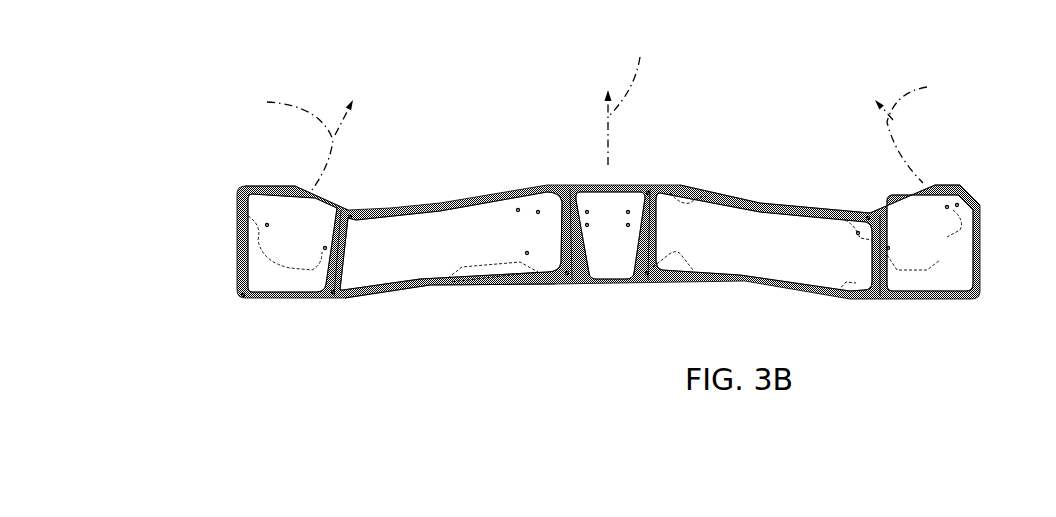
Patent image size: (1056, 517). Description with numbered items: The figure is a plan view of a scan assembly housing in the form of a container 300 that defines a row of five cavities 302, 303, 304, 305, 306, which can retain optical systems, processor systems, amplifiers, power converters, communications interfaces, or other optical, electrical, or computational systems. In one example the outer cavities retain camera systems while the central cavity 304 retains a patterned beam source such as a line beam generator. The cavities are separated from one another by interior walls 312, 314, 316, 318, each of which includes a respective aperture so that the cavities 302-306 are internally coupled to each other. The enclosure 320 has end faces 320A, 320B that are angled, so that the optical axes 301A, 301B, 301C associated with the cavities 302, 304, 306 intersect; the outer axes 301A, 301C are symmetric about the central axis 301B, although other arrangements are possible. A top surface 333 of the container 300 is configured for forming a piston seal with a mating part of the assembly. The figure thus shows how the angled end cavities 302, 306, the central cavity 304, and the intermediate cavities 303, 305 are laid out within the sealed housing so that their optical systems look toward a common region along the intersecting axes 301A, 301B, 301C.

The container 300 is at (208, 317).
The optical axis 301A is at (278, 141).
The optical axis 301B is at (635, 92).
The optical axis 301C is at (929, 125).
The cavity 302 is at (314, 260).
The cavity 303 is at (469, 250).
The cavity 304 is at (629, 225).
The cavity 305 is at (774, 252).
The cavity 306 is at (954, 260).
The interior wall 312 is at (327, 296).
The interior wall 314 is at (572, 187).
The interior wall 316 is at (663, 187).
The interior wall 318 is at (888, 256).
The enclosure 320 is at (790, 199).
The face 320A is at (294, 188).
The face 320B is at (924, 188).
The top surface 333 is at (445, 293).